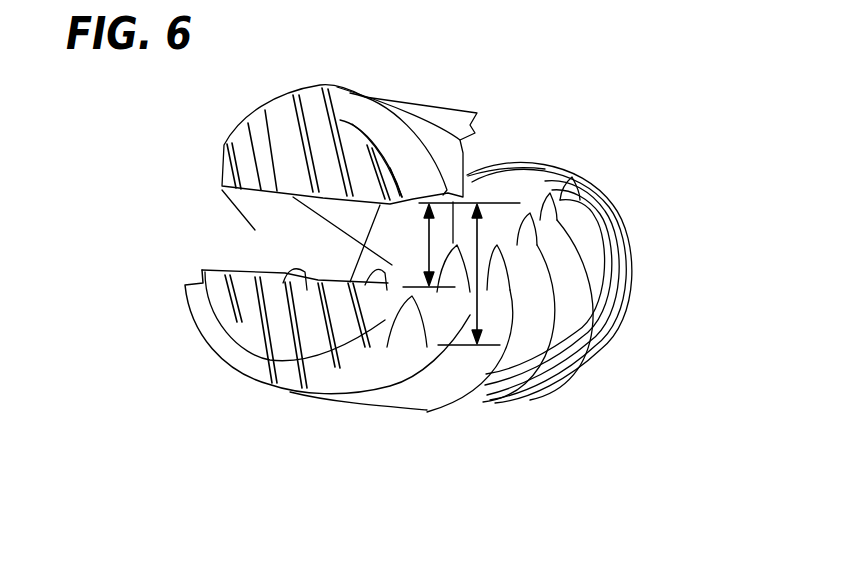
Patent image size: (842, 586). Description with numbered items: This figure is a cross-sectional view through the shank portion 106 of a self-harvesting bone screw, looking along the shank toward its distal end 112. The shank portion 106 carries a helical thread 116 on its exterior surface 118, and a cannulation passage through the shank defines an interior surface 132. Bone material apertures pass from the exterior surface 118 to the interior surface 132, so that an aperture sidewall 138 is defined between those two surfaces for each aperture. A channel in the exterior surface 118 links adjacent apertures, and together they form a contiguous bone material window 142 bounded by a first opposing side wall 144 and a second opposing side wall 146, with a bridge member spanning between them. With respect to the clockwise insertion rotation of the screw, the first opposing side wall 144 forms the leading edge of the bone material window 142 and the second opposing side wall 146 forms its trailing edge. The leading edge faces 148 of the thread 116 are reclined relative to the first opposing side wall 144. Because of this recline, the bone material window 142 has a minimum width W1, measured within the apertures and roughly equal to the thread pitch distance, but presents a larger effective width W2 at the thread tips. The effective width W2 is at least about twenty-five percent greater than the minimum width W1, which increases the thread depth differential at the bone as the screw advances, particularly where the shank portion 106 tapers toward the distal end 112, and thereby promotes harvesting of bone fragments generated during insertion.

The shank portion 106 is at (597, 122).
The distal end 112 is at (632, 250).
The thread 116 is at (386, 393).
The exterior surface 118 is at (395, 332).
The interior surface 132 is at (360, 217).
The aperture sidewall 138 is at (260, 218).
The bone material window 142 is at (228, 252).
The first opposing side wall 144 is at (367, 276).
The second opposing side wall 146 is at (383, 203).
The leading edge faces 148 is at (521, 244).
The minimum width W1 is at (425, 247).
The effective width W2 is at (388, 284).